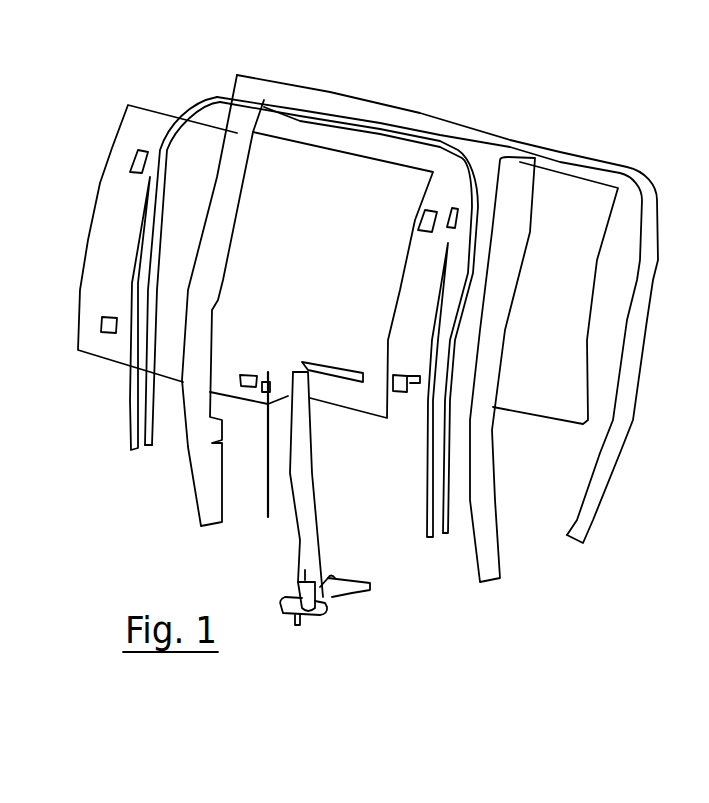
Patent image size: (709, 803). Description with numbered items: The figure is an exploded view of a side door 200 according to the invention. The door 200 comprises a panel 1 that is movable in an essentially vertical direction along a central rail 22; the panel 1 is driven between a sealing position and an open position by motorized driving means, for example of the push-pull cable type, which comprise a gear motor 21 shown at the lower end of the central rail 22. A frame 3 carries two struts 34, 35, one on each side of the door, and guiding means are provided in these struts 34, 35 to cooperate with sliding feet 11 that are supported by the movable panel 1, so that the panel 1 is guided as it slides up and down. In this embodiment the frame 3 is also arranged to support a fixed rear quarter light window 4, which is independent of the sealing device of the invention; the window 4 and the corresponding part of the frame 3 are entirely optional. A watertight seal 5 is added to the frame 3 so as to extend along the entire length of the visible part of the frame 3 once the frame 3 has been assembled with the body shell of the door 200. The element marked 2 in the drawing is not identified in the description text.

The panel 1 is at (103, 210).
The center pillar module 2 is at (278, 529).
The frame 3 is at (357, 106).
The fixed rear quarter light window 4 is at (577, 190).
The watertight seal 5 is at (172, 140).
The sliding feet 11 is at (137, 147).
The gear motor 21 is at (320, 602).
The central rail 22 is at (297, 473).
The strut 34 is at (530, 232).
The strut 35 is at (233, 213).
The side door 200 is at (109, 526).